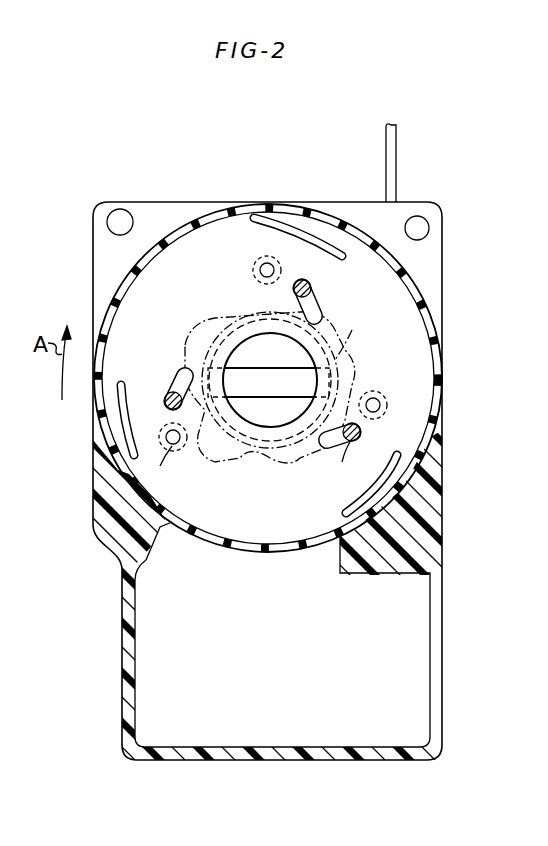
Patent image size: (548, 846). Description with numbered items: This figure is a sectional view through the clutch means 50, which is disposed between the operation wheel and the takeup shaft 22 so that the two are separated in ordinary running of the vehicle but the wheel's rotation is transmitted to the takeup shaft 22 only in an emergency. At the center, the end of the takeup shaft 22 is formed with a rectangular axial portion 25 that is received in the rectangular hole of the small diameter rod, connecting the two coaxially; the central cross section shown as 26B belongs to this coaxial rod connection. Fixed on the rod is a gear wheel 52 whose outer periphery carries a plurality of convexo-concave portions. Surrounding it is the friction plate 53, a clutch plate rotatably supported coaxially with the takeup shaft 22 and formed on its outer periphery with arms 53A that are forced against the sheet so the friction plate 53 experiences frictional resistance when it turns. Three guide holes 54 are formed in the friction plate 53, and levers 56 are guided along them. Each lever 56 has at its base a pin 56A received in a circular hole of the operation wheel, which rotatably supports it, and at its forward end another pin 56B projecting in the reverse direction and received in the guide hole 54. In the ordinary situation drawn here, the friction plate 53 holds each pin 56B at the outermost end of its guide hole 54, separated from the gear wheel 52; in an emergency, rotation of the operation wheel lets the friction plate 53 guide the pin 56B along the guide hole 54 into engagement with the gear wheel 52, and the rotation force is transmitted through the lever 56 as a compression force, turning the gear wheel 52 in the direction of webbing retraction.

The takeup shaft 22 is at (200, 350).
The rectangular axial portion 25 is at (237, 377).
The slot 26B is at (298, 297).
The clutch means 50 is at (243, 234).
The gear wheel 52 is at (352, 334).
The friction plate 53 is at (143, 303).
The arms 53A is at (305, 213).
The guide hole 54 is at (178, 380).
The levers 56 is at (258, 267).
The pin 56A is at (258, 279).
The pin 56B is at (254, 466).